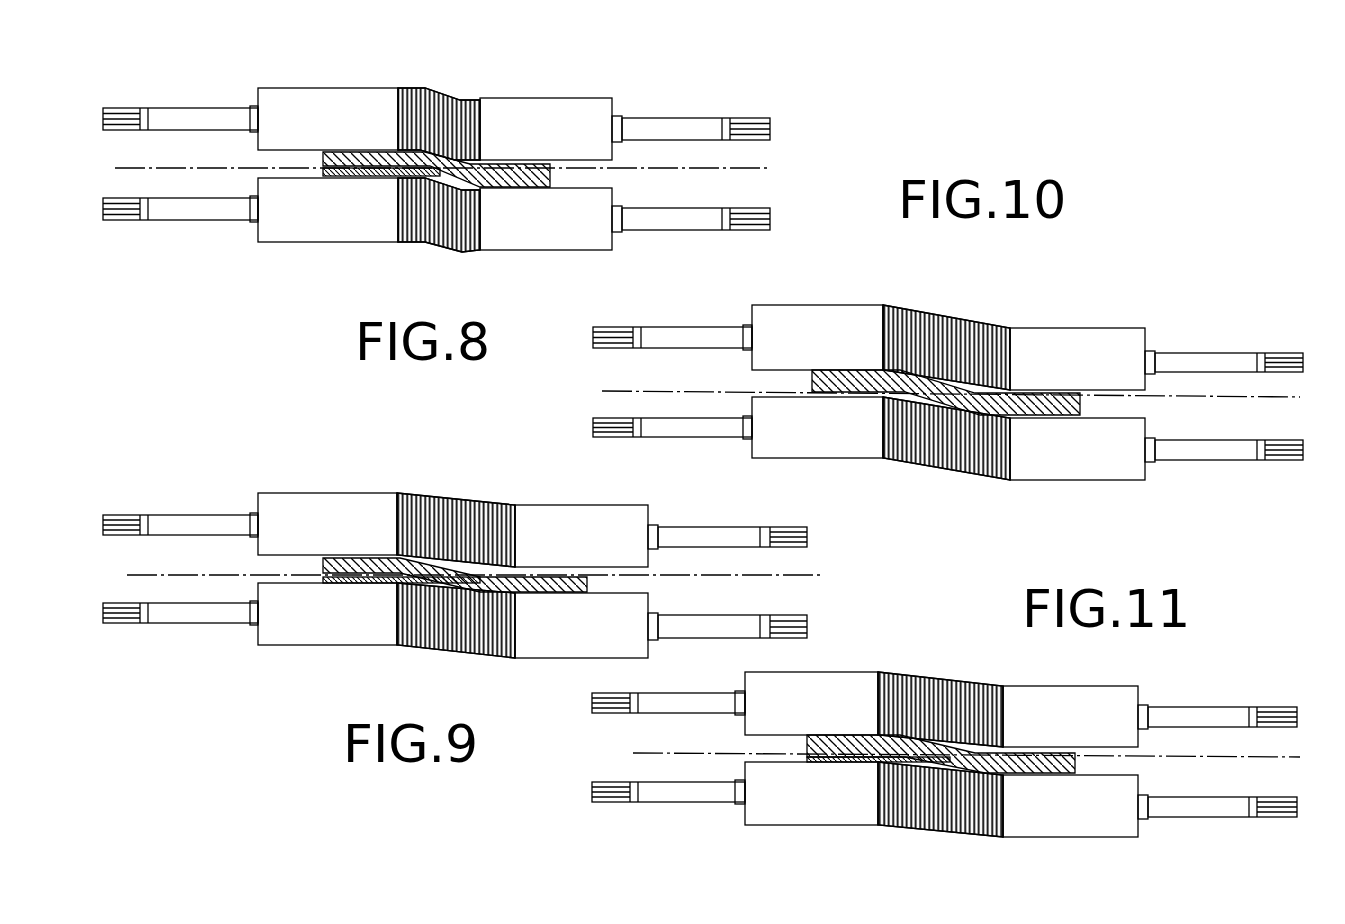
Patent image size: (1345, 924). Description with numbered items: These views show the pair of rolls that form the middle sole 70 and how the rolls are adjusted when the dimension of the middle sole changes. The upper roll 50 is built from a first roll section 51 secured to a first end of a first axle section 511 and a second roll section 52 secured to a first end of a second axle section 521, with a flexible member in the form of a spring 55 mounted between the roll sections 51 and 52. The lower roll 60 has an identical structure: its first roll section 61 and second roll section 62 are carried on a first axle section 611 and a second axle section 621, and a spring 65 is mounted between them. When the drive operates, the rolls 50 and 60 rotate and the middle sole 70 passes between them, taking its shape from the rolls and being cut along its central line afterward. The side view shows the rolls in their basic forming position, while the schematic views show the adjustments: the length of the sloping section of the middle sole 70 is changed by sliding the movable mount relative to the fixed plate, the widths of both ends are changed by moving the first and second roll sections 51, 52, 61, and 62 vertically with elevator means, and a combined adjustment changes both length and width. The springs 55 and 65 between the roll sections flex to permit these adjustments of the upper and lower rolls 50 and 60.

In FIG. 8, the upper roll 50 is at (449, 88).
In FIG. 9, the upper roll 50 is at (458, 492).
In FIG. 10, the upper roll 50 is at (942, 300).
In FIG. 11, the upper roll 50 is at (973, 660).
In FIG. 8, the first roll section 51 is at (325, 100).
In FIG. 9, the first roll section 51 is at (323, 501).
In FIG. 10, the first roll section 51 is at (822, 312).
In FIG. 11, the first roll section 51 is at (835, 687).
In FIG. 8, the second roll section 52 is at (562, 100).
In FIG. 9, the second roll section 52 is at (584, 520).
In FIG. 10, the second roll section 52 is at (1097, 330).
In FIG. 11, the second roll section 52 is at (1063, 685).
In FIG. 8, the spring 55 is at (465, 100).
In FIG. 9, the spring 55 is at (494, 503).
In FIG. 10, the spring 55 is at (960, 322).
In FIG. 11, the spring 55 is at (942, 684).
In FIG. 8, the lower roll 60 is at (438, 251).
In FIG. 9, the lower roll 60 is at (488, 686).
In FIG. 10, the lower roll 60 is at (933, 470).
In FIG. 11, the lower roll 60 is at (958, 843).
In FIG. 8, the first roll section 61 is at (365, 228).
In FIG. 9, the first roll section 61 is at (318, 647).
In FIG. 10, the first roll section 61 is at (832, 461).
In FIG. 11, the first roll section 61 is at (822, 827).
In FIG. 8, the second roll section 62 is at (563, 232).
In FIG. 9, the second roll section 62 is at (566, 661).
In FIG. 10, the second roll section 62 is at (1072, 482).
In FIG. 11, the second roll section 62 is at (1063, 838).
In FIG. 8, the spring 65 is at (470, 252).
In FIG. 9, the spring 65 is at (449, 650).
In FIG. 10, the spring 65 is at (962, 472).
In FIG. 11, the spring 65 is at (930, 825).
In FIG. 8, the middle sole 70 is at (325, 160).
In FIG. 9, the middle sole 70 is at (363, 556).
In FIG. 10, the middle sole 70 is at (857, 377).
In FIG. 11, the middle sole 70 is at (853, 747).
In FIG. 8, the first axle section 511 is at (198, 110).
In FIG. 8, the second axle section 521 is at (683, 126).
In FIG. 8, the first axle section 611 is at (198, 214).
In FIG. 8, the second axle section 621 is at (685, 224).